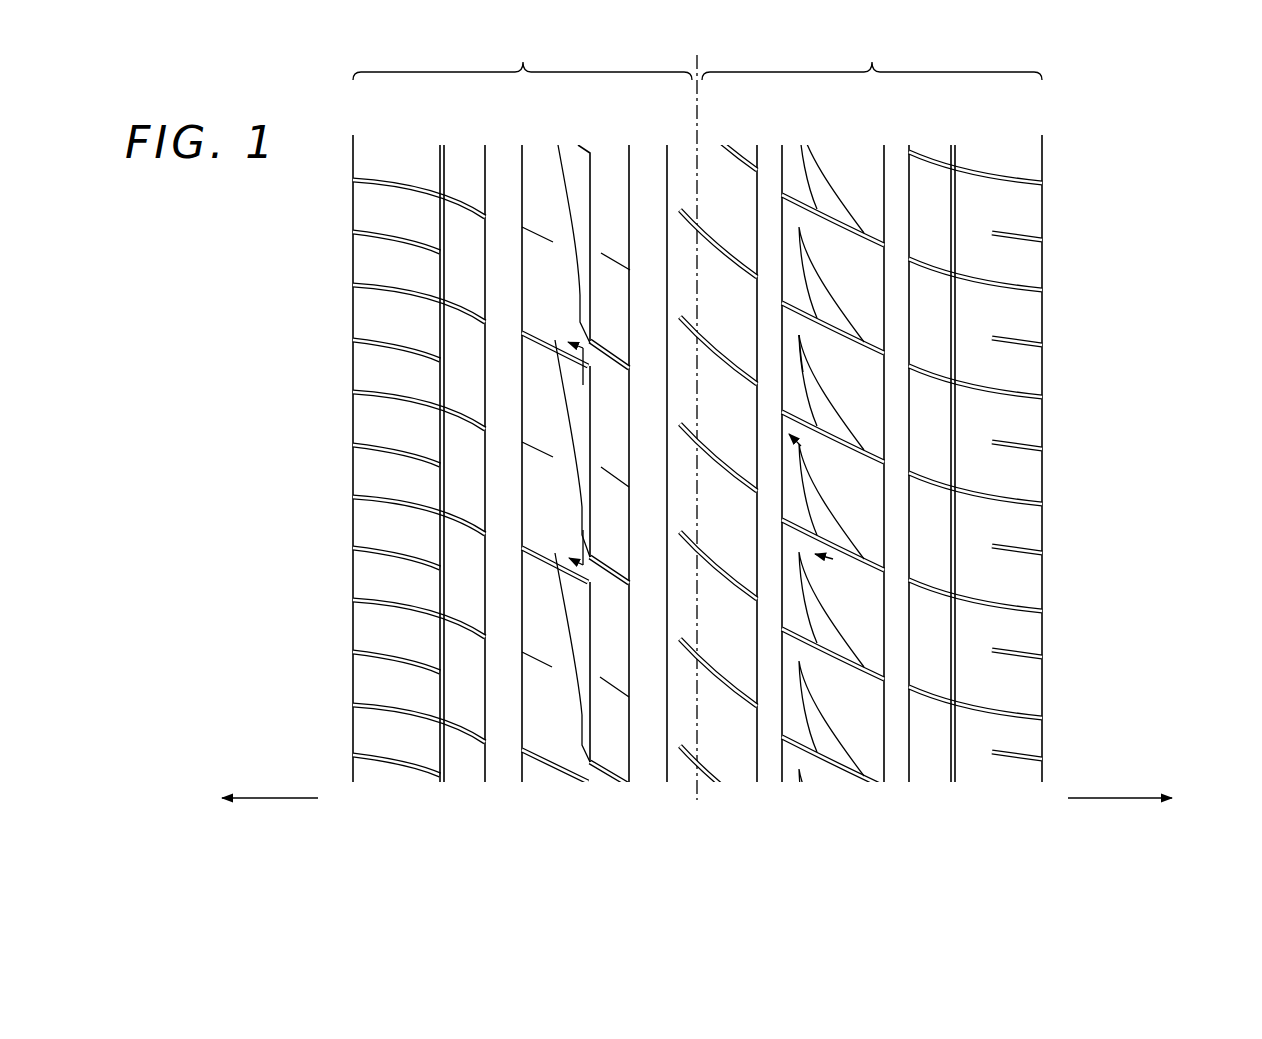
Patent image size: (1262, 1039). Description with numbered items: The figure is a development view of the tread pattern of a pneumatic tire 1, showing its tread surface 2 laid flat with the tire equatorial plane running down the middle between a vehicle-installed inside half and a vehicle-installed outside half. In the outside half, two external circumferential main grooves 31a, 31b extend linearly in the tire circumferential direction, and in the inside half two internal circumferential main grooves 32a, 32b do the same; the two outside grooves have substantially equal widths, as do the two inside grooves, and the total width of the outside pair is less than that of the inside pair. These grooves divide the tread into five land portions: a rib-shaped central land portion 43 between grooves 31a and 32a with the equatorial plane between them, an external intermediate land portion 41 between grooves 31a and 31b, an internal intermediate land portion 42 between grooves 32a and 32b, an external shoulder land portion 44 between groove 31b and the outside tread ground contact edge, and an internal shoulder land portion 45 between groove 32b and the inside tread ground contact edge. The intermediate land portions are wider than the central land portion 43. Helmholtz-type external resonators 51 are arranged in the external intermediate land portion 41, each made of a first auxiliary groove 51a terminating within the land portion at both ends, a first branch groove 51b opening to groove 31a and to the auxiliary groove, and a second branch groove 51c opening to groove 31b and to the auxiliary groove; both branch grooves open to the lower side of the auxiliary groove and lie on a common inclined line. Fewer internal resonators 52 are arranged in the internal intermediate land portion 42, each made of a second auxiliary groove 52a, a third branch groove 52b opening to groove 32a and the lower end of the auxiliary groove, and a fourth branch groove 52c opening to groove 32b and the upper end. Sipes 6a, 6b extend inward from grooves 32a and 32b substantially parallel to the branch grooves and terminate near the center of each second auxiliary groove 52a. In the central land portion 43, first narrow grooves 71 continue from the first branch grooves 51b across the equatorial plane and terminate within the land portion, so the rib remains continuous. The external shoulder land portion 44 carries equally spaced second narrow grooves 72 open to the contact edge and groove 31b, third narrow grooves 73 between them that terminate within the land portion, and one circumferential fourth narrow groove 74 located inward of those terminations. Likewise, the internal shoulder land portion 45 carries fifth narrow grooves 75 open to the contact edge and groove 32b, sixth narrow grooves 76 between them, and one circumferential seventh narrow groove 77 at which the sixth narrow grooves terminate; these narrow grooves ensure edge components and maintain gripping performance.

The pneumatic tire 1 is at (1078, 168).
The tread surface 2 is at (1054, 146).
The sipe 6a is at (620, 470).
The sipe 6b is at (536, 449).
The external circumferential main groove 31a is at (766, 158).
The external circumferential main groove 31b is at (891, 158).
The internal circumferential main groove 32a is at (644, 158).
The internal circumferential main groove 32b is at (503, 158).
The external intermediate land portion 41 is at (782, 795).
The internal intermediate land portion 42 is at (523, 795).
The central land portion 43 is at (757, 795).
The external shoulder land portion 44 is at (1042, 795).
The internal shoulder land portion 45 is at (353, 795).
The external resonator 51 is at (733, 273).
The first auxiliary groove 51a is at (812, 373).
The first branch groove 51b is at (805, 413).
The second branch groove 51c is at (803, 385).
The internal resonator 52 is at (286, 362).
The second auxiliary groove 52a is at (582, 427).
The third branch groove 52b is at (613, 560).
The fourth branch groove 52c is at (541, 343).
The first narrow groove 71 is at (726, 470).
The second narrow groove 72 is at (983, 281).
The third narrow groove 73 is at (1015, 234).
The fourth narrow groove 74 is at (956, 211).
The fifth narrow groove 75 is at (405, 296).
The sixth narrow groove 76 is at (405, 243).
The seventh narrow groove 77 is at (446, 172).